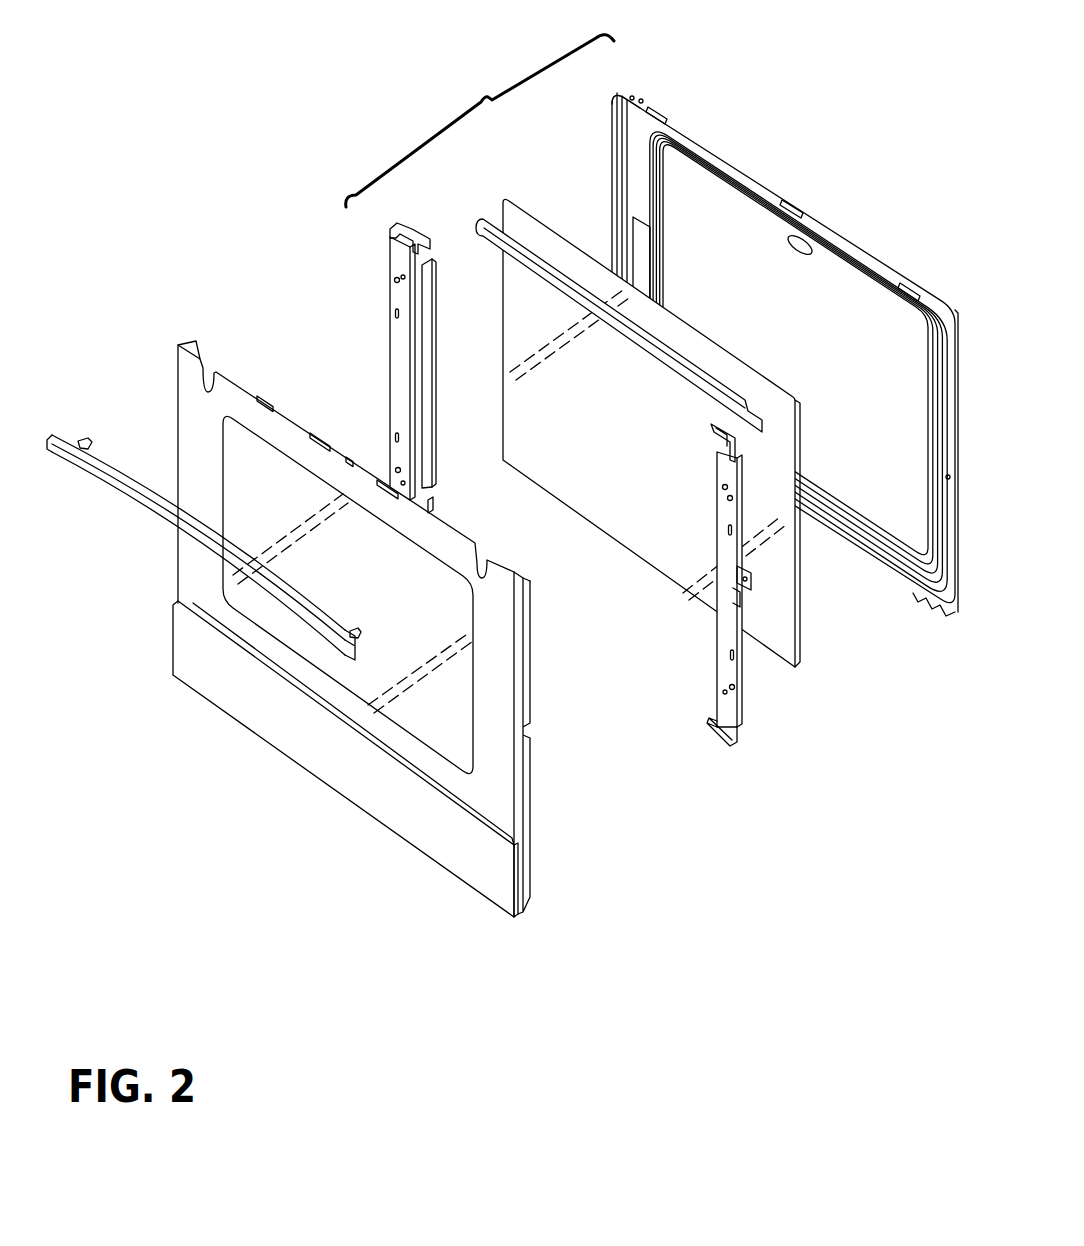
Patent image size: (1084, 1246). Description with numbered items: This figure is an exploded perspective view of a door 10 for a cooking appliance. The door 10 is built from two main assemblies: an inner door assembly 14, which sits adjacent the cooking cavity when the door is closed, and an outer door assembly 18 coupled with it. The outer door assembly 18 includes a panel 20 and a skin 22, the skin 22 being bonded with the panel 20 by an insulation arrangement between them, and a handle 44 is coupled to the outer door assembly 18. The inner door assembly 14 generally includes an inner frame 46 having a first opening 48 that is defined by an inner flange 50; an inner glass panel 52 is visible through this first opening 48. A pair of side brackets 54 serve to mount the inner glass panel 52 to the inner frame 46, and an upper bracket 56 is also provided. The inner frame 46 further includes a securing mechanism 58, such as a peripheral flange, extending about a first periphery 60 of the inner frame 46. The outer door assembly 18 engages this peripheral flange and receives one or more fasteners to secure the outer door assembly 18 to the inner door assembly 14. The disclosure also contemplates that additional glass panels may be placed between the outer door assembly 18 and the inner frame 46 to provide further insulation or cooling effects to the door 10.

The door 10 is at (274, 104).
The inner door assembly 14 is at (631, 415).
The outer door assembly 18 is at (176, 336).
The panel 20 is at (175, 445).
The skin 22 is at (173, 635).
The handle 44 is at (50, 437).
The inner frame 46 is at (628, 87).
The first opening 48 is at (797, 240).
The inner flange 50 is at (657, 173).
The inner glass panel 52 is at (800, 650).
The side brackets 54 is at (392, 232).
The upper bracket 56 is at (478, 216).
The securing mechanism 58 is at (947, 620).
The first periphery 60 is at (613, 92).